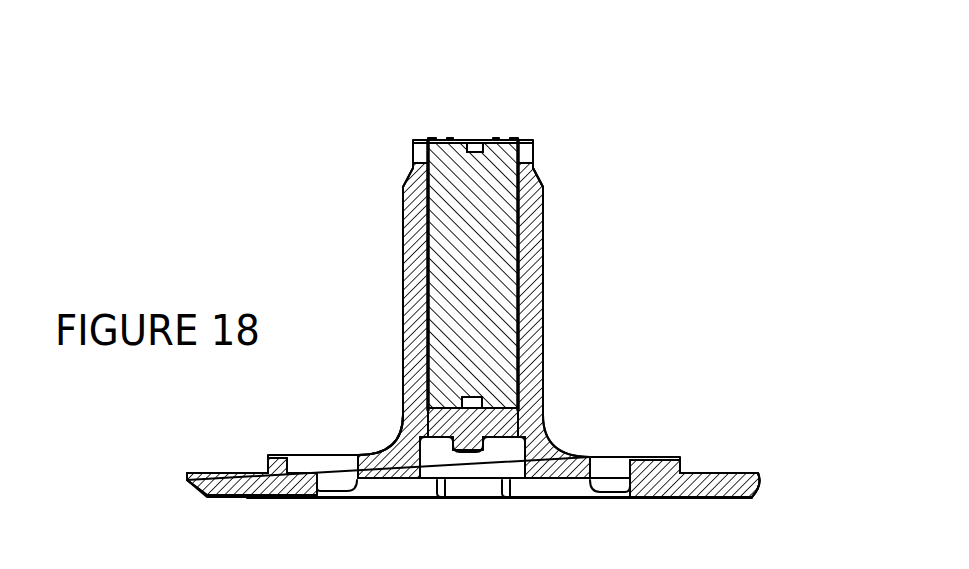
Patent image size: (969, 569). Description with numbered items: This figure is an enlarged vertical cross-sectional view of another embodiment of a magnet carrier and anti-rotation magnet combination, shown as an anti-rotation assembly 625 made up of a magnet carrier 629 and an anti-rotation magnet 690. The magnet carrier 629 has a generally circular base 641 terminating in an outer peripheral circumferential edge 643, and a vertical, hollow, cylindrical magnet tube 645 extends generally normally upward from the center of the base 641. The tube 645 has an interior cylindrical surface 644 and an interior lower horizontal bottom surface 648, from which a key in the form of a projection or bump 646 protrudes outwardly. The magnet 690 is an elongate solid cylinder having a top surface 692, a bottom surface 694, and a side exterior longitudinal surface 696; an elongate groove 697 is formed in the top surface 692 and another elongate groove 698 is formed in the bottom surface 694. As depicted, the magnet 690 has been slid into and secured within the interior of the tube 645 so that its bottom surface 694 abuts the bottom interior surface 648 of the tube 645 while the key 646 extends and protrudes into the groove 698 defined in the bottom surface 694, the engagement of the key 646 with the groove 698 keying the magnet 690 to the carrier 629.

The anti-rotation assembly 625 is at (660, 243).
The magnet carrier 629 is at (550, 206).
The base 641 is at (697, 473).
The outer peripheral circumferential edge 643 is at (755, 497).
The interior cylindrical surface 644 is at (420, 142).
The magnet tube 645 is at (556, 262).
The key 646 is at (478, 410).
The interior bottom surface 648 is at (517, 375).
The anti-rotation magnet 690 is at (472, 195).
The top surface 692 is at (508, 140).
The bottom surface 694 is at (418, 430).
The side exterior longitudinal surface 696 is at (406, 265).
The groove 697 is at (474, 140).
The groove 698 is at (480, 410).